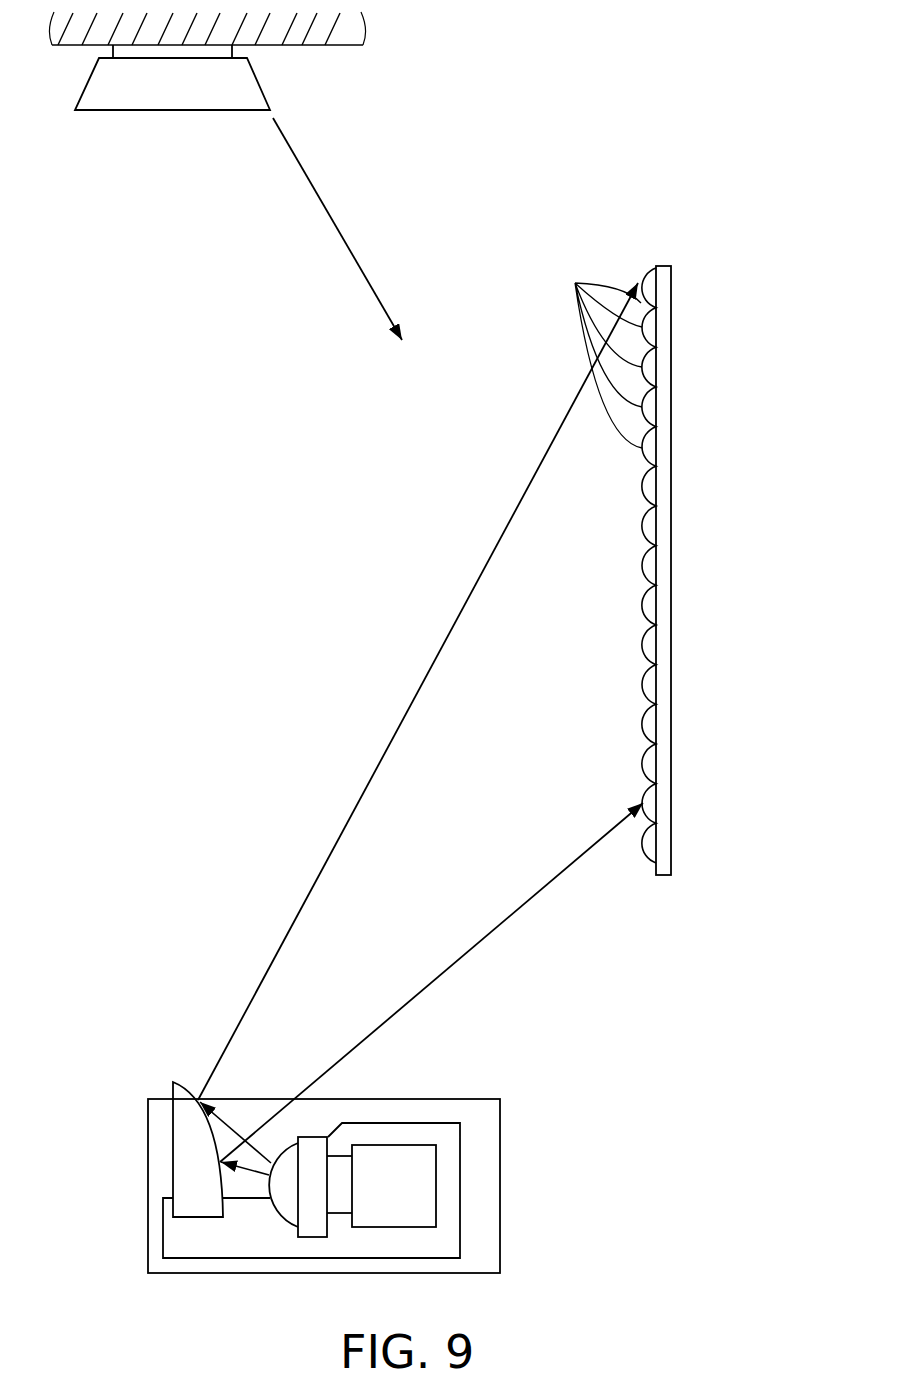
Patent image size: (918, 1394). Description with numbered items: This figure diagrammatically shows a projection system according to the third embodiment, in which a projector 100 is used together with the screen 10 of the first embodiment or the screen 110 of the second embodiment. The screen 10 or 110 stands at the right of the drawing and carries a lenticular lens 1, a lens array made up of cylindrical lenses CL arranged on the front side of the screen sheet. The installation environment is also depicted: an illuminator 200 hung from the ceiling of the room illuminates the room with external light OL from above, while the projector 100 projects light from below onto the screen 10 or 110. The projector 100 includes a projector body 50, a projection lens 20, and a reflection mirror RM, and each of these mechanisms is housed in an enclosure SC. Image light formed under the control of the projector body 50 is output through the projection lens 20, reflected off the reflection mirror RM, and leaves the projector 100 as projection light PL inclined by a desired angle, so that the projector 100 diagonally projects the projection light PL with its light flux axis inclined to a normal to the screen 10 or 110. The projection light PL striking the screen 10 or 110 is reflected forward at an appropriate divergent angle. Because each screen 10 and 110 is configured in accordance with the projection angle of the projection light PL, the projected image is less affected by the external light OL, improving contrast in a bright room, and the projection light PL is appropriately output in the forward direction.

The illuminator 200 is at (68, 133).
The external light OL is at (322, 197).
The screen 10 is at (674, 207).
The screen 110 is at (713, 503).
The lenticular lens 1 is at (644, 262).
The cylindrical lenses CL is at (590, 360).
The projection light PL is at (470, 947).
The projector 100 is at (391, 1138).
The enclosure SC is at (500, 1133).
The projector body 50 is at (460, 1222).
The reflection mirror RM is at (193, 1090).
The projection lens 20 is at (363, 1143).